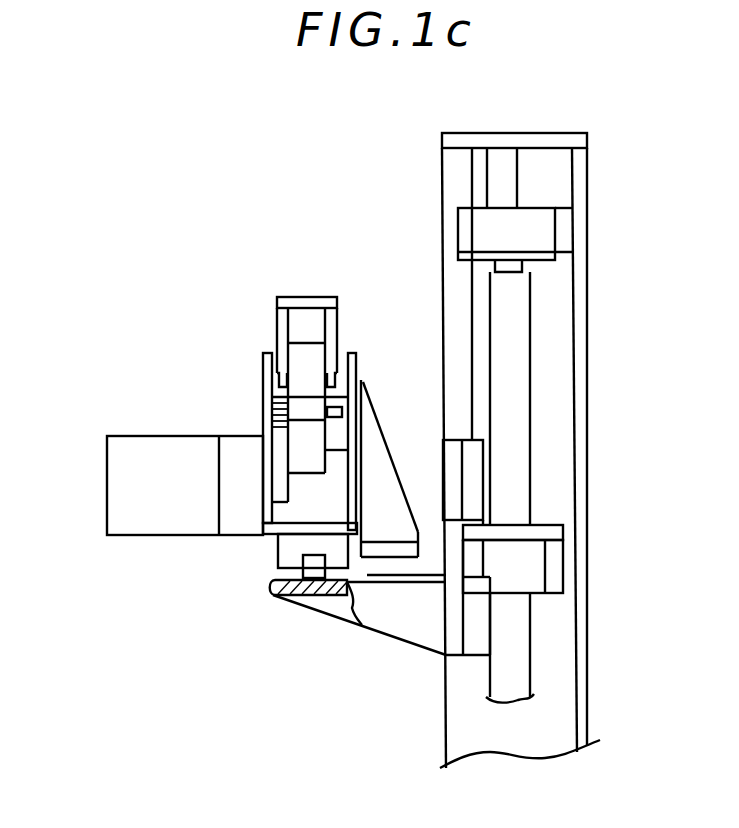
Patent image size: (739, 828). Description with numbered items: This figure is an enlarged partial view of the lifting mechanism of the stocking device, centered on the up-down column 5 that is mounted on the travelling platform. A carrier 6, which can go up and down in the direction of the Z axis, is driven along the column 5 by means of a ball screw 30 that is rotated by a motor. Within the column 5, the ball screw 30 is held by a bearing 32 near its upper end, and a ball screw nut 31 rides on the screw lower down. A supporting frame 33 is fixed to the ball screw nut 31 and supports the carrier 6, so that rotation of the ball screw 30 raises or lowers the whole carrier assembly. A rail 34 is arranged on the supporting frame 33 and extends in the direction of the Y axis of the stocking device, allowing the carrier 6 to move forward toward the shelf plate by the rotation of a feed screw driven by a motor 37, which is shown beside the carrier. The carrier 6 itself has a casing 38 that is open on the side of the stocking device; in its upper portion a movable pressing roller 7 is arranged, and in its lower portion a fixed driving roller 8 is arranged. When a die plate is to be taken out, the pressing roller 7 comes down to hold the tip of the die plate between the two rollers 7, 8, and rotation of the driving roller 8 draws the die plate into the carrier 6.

The up-down column 5 is at (592, 158).
The carrier 6 is at (302, 284).
The movable pressing roller 7 is at (297, 360).
The fixed driving roller 8 is at (278, 430).
The ball screw 30 is at (525, 405).
The ball screw nut 31 is at (555, 562).
The bearing of the ball screw 32 is at (545, 230).
The supporting frame 33 is at (403, 627).
The rail 34 is at (277, 562).
The motor 37 is at (122, 487).
The casing 38 is at (355, 352).